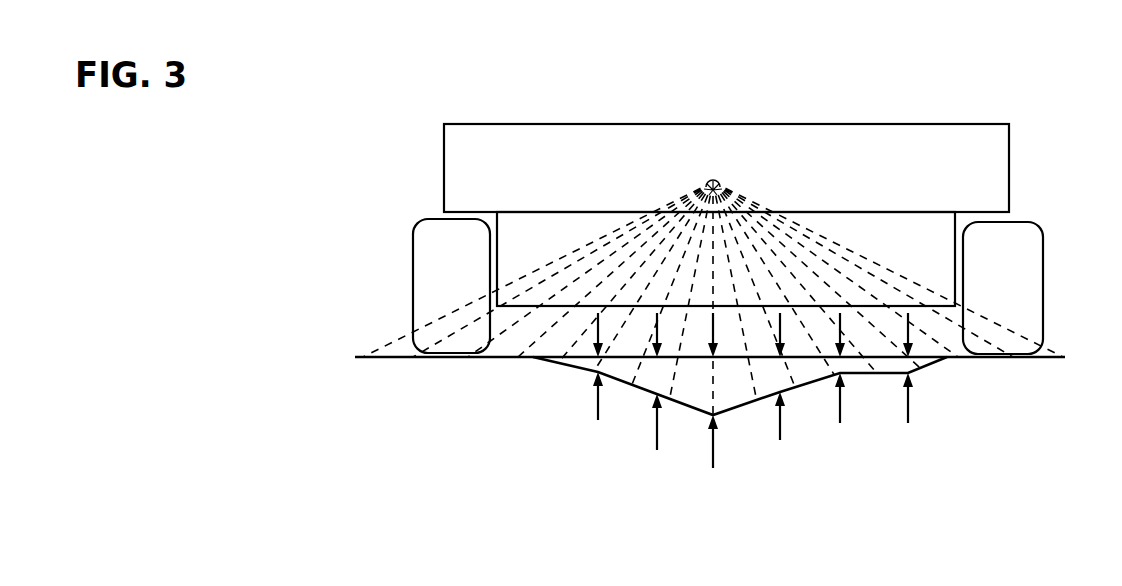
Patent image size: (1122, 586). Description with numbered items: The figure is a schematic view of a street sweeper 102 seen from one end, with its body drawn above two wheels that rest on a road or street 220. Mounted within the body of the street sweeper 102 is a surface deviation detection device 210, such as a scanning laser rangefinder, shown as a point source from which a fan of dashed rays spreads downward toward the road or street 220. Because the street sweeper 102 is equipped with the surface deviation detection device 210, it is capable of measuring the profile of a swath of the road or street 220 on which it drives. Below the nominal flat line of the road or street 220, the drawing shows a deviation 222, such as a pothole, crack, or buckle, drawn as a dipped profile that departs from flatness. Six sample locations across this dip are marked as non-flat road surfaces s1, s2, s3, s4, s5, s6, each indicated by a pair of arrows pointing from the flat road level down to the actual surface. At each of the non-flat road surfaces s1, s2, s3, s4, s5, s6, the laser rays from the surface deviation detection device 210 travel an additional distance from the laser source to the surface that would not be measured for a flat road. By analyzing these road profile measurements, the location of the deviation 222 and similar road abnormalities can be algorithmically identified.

The street sweeper 102 is at (985, 170).
The surface deviation detection device 210 is at (713, 282).
The road or street 220 is at (378, 355).
The deviation 222 is at (638, 393).
The non-flat road surface s1 is at (598, 381).
The non-flat road surface s2 is at (657, 396).
The non-flat road surface s3 is at (713, 405).
The non-flat road surface s4 is at (780, 391).
The non-flat road surface s5 is at (842, 382).
The non-flat road surface s6 is at (910, 382).